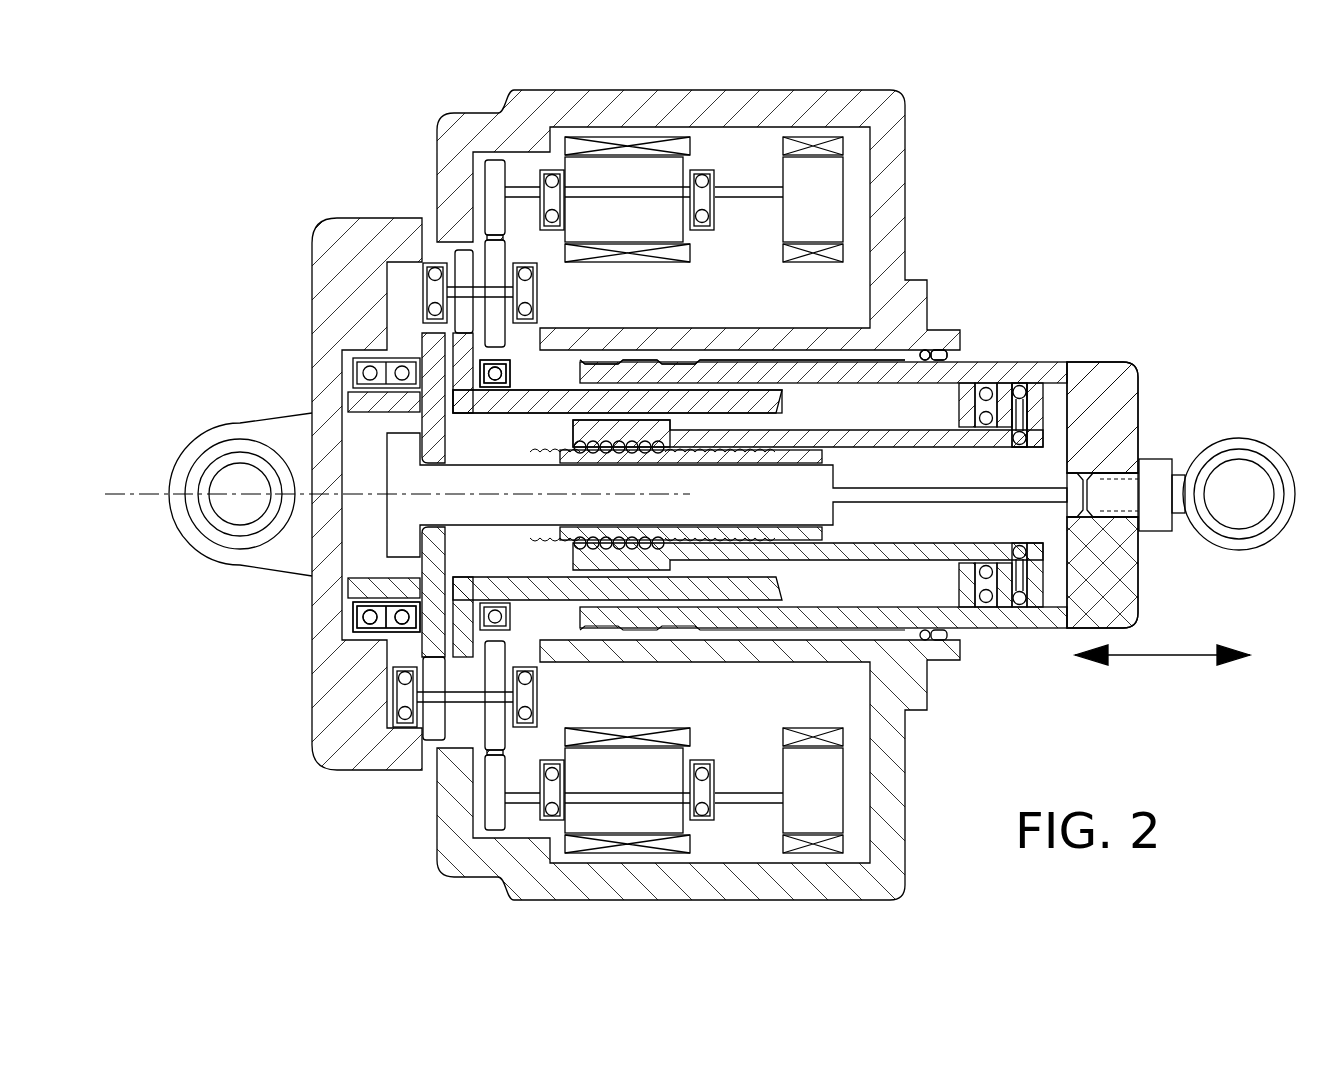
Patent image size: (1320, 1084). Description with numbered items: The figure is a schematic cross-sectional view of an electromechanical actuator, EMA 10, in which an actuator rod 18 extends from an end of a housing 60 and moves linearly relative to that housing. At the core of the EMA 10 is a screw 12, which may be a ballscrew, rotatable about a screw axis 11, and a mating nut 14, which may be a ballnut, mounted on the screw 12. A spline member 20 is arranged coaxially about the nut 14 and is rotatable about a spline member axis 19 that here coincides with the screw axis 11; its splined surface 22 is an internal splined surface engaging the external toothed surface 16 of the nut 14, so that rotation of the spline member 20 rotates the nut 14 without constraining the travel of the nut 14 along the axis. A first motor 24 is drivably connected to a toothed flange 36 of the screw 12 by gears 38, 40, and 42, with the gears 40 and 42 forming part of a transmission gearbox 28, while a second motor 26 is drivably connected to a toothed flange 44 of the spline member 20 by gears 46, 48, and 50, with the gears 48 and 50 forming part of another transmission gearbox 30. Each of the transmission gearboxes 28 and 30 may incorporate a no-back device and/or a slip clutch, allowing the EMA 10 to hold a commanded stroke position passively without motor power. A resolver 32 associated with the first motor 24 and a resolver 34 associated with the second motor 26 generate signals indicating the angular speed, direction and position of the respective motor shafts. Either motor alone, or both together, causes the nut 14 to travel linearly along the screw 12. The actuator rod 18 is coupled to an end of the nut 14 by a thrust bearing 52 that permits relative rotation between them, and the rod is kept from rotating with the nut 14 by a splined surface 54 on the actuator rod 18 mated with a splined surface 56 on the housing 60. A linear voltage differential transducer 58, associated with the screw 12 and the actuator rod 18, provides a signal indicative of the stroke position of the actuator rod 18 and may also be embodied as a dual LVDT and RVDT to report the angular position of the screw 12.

The EMA 10 is at (1063, 224).
The screw axis 11 is at (210, 482).
The screw 12 is at (378, 580).
The nut 14 is at (860, 428).
The external toothed surface 16 is at (578, 412).
The actuator rod 18 is at (1085, 362).
The spline member axis 19 is at (150, 494).
The spline member 20 is at (572, 387).
The splined surface 22 is at (780, 421).
The first motor 24 is at (636, 802).
The second motor 26 is at (638, 209).
The transmission gearbox 28 is at (455, 744).
The transmission gearbox 30 is at (472, 243).
The resolver 32 is at (830, 802).
The resolver 34 is at (830, 209).
The toothed flange 36 is at (428, 655).
The gear 38 is at (480, 820).
The gear 40 is at (510, 740).
The gear 42 is at (432, 742).
The toothed flange 44 is at (445, 338).
The gear 46 is at (485, 178).
The gear 48 is at (510, 252).
The gear 50 is at (455, 256).
The thrust bearing 52 is at (1020, 390).
The splined surface 54 is at (657, 359).
The splined surface 56 is at (753, 362).
The linear voltage differential transducer 58 is at (748, 504).
The housing 60 is at (330, 232).